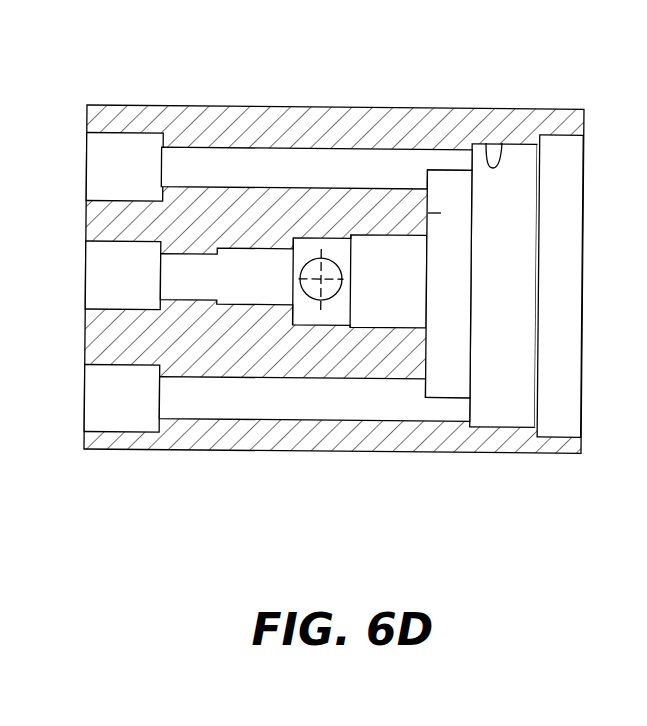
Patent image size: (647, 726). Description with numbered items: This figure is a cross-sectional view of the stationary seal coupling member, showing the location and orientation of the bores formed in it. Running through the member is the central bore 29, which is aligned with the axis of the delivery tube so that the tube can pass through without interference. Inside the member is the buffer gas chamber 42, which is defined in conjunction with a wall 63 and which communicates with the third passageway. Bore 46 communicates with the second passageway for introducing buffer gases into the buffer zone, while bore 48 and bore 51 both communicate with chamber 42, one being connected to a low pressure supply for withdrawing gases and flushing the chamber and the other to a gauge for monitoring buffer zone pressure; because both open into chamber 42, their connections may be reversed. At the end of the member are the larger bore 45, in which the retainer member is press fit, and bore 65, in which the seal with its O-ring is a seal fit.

The central bore 29 is at (178, 277).
The buffer gas chamber 42 is at (440, 377).
The bore 45 is at (558, 137).
The bore 46 is at (330, 260).
The bore 48 is at (185, 160).
The bore 51 is at (198, 400).
The wall 63 is at (428, 213).
The bore 65 is at (502, 143).